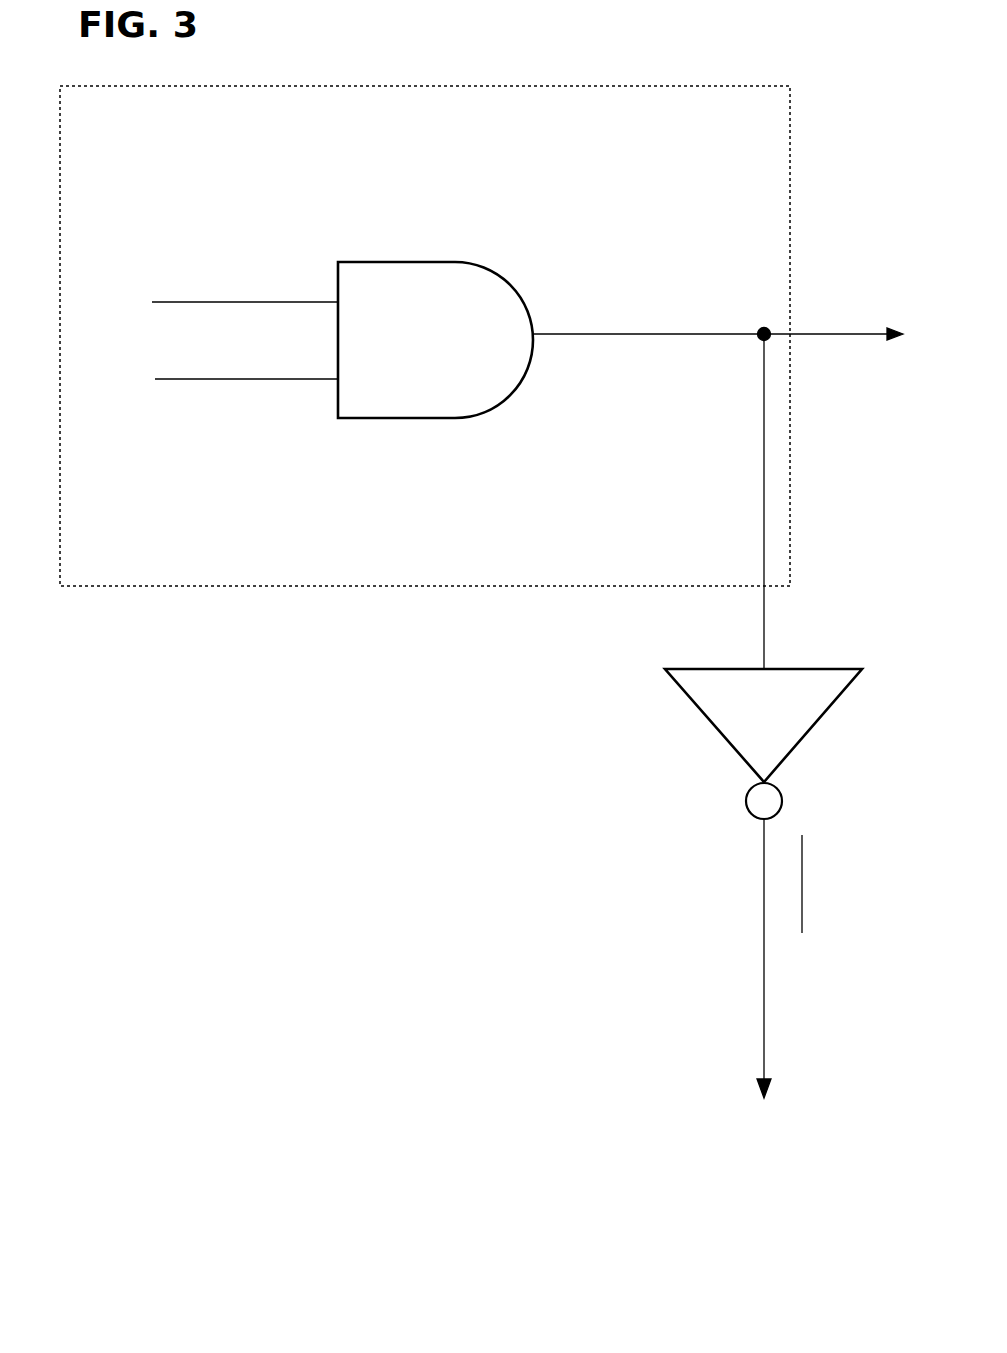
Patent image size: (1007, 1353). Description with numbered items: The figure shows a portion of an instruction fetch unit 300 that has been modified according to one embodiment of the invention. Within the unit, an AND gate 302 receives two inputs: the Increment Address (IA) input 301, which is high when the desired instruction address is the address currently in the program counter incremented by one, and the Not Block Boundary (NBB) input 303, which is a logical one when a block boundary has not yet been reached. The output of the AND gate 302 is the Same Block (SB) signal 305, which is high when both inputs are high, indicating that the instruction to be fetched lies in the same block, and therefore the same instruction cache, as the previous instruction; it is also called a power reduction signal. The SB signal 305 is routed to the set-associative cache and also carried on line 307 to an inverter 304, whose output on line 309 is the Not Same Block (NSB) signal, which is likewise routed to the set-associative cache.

The instruction fetch unit 300 is at (593, 86).
The Increment Address (IA) input 301 is at (299, 301).
The AND gate 302 is at (479, 290).
The Not Block Boundary (NBB) input 303 is at (299, 379).
The inverter 304 is at (793, 720).
The Same Block (SB) signal 305 is at (558, 334).
The line 307 is at (765, 615).
The Not Same Block (NSB) signal line 309 is at (764, 1010).